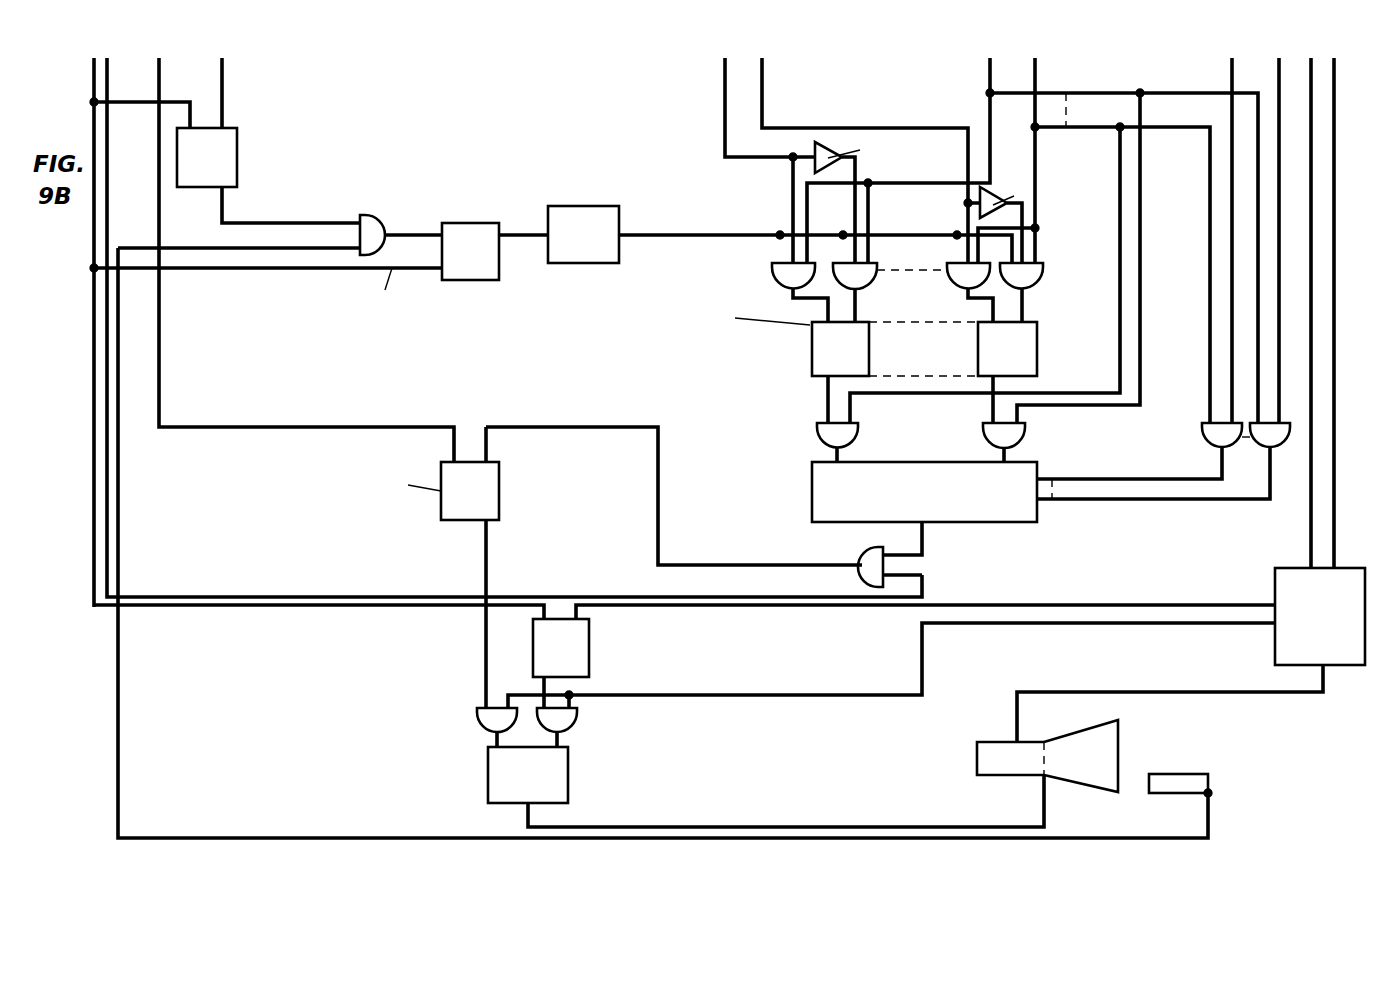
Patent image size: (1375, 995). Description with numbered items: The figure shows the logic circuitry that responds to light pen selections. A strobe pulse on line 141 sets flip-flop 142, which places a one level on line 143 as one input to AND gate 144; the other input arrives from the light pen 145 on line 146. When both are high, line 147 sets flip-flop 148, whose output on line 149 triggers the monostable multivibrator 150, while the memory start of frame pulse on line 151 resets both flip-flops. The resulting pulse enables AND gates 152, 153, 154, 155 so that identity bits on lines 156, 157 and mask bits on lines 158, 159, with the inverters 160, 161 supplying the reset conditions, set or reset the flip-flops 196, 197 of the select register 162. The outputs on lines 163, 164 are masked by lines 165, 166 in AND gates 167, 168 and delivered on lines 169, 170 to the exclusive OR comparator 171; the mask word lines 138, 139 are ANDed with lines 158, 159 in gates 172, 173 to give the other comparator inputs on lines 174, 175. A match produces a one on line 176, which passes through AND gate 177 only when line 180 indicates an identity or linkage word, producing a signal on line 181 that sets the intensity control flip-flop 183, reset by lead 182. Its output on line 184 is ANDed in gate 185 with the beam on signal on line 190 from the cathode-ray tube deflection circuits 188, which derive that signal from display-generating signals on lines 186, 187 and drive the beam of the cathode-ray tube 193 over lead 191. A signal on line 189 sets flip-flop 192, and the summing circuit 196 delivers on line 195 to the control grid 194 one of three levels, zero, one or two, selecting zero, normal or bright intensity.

The line 138 is at (1232, 82).
The line 139 is at (1279, 143).
The line 141 is at (222, 73).
The flip-flop 142 is at (237, 155).
The line 143 is at (244, 223).
The AND gate 144 is at (375, 205).
The light pen 145 is at (1190, 774).
The line 146 is at (250, 252).
The line 147 is at (410, 235).
The flip-flop 148 is at (465, 280).
The line 149 is at (520, 235).
The monostable multivibrator 150 is at (583, 263).
The line 151 is at (94, 90).
The AND gate 152 is at (772, 275).
The AND gate 153 is at (870, 282).
The AND gate 154 is at (947, 268).
The AND gate 155 is at (1043, 275).
The line 156 is at (725, 82).
The line 157 is at (762, 82).
The line 158 is at (990, 82).
The line 159 is at (1035, 82).
The inverter 160 is at (822, 150).
The inverter 161 is at (990, 200).
The select register 162 is at (900, 326).
The line 163 is at (828, 400).
The line 164 is at (993, 410).
The line 165 is at (872, 398).
The line 166 is at (1035, 410).
The AND gate 167 is at (817, 430).
The AND gate 168 is at (1025, 440).
The line 169 is at (845, 450).
The line 170 is at (1000, 452).
The exclusive OR comparator 171 is at (1005, 524).
The AND gate 172 is at (1202, 432).
The AND gate 173 is at (1290, 442).
The line 174 is at (1098, 480).
The line 175 is at (1095, 500).
The line 176 is at (922, 545).
The AND gate 177 is at (862, 552).
The line 180 is at (107, 73).
The line 181 is at (658, 515).
The lead 182 is at (159, 73).
The intensity control flip-flop 183 is at (499, 492).
The line 184 is at (486, 560).
The AND gate 185 is at (477, 722).
The line 186 is at (1311, 166).
The line 187 is at (1334, 189).
The cathode-ray tube deflection circuits 188 is at (1278, 570).
The line 189 is at (1130, 605).
The line 190 is at (1130, 623).
The lead 191 is at (1120, 694).
The flip-flop 192 is at (589, 648).
The cathode-ray tube 193 is at (1010, 785).
The control grid 194 is at (1050, 757).
The line 195 is at (715, 825).
The flip-flop / summing circuit 196 is at (812, 355).
The flip-flop 197 is at (1037, 355).